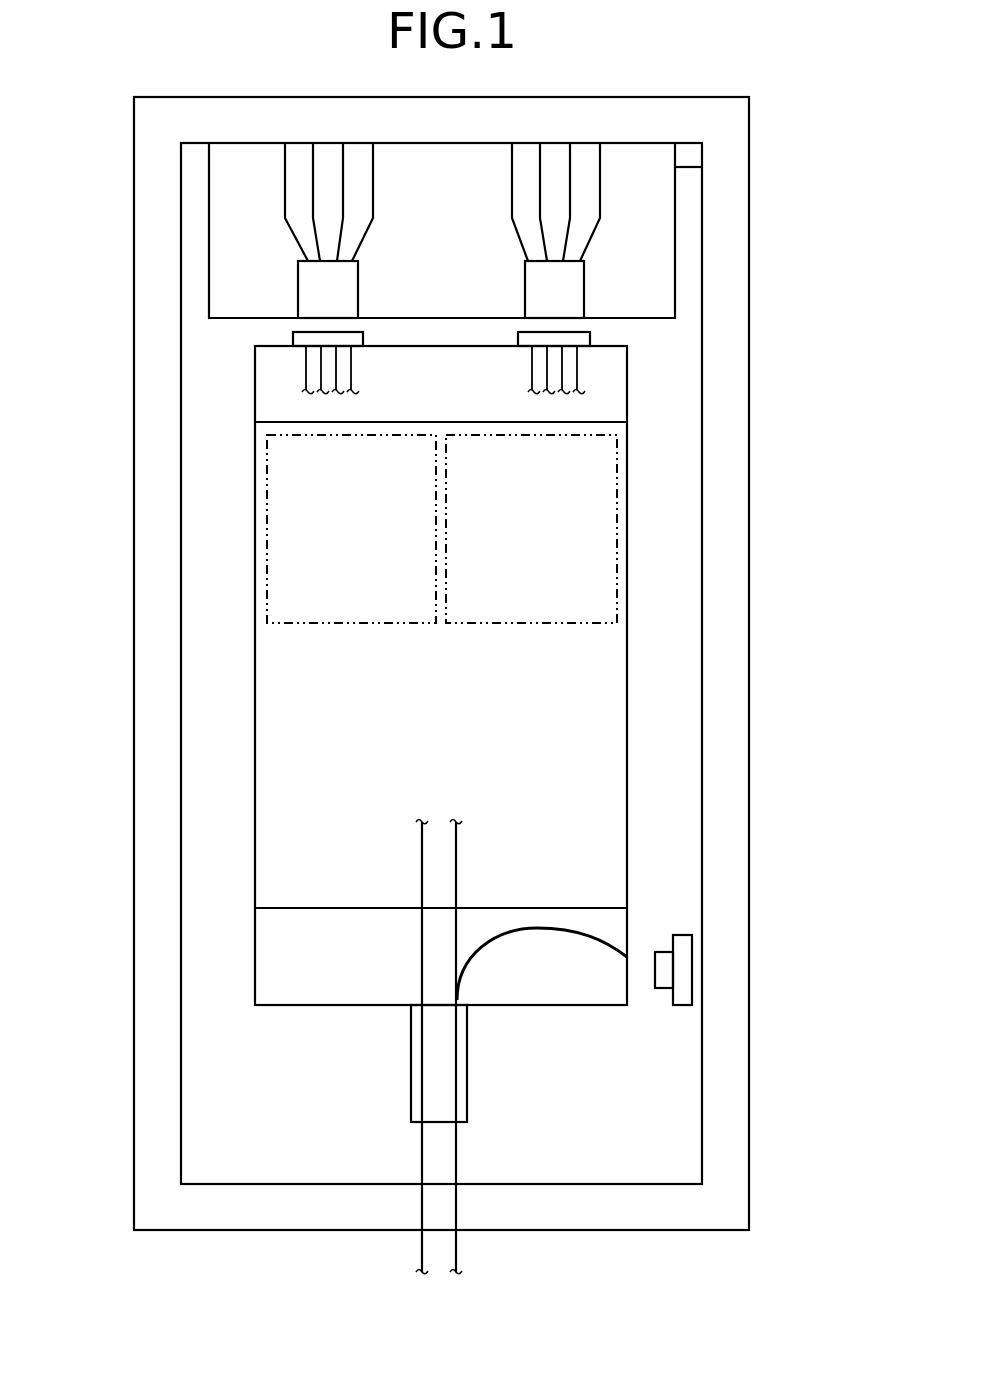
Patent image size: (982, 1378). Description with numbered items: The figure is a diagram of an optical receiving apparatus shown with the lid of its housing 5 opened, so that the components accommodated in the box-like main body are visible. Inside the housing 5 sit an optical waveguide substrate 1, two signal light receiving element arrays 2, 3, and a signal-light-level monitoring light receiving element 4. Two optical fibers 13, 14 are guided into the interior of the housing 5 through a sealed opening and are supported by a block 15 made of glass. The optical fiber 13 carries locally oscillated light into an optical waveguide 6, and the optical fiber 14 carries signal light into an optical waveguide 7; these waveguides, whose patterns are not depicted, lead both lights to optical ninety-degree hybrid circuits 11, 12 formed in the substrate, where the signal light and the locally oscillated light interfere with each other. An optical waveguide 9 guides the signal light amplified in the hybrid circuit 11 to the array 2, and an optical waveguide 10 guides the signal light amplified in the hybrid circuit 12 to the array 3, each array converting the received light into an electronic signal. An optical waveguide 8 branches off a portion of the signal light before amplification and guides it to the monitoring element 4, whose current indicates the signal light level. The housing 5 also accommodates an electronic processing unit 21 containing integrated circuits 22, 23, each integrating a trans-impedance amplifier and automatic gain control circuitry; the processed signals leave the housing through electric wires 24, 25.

The optical waveguide substrate 1 is at (255, 710).
The signal light receiving element array 2 is at (293, 341).
The signal light receiving element array 3 is at (580, 340).
The signal-light-level monitoring light receiving element 4 is at (665, 980).
The housing 5 is at (590, 97).
The optical waveguide 6 is at (420, 853).
The optical waveguide 7 is at (458, 852).
The optical waveguide 8 is at (585, 935).
The optical waveguide 9 is at (290, 368).
The optical waveguide 10 is at (590, 373).
The optical 90-degree hybrid circuit 11 is at (265, 530).
The optical 90-degree hybrid circuit 12 is at (617, 545).
The optical fiber 13 is at (420, 1248).
The optical fiber 14 is at (456, 1248).
The block 15 is at (413, 1070).
The electronic processing unit 21 is at (703, 167).
The integrated circuit 22 is at (315, 290).
The integrated circuit 23 is at (578, 290).
The electric wire 24 is at (265, 192).
The electric wire 25 is at (612, 218).